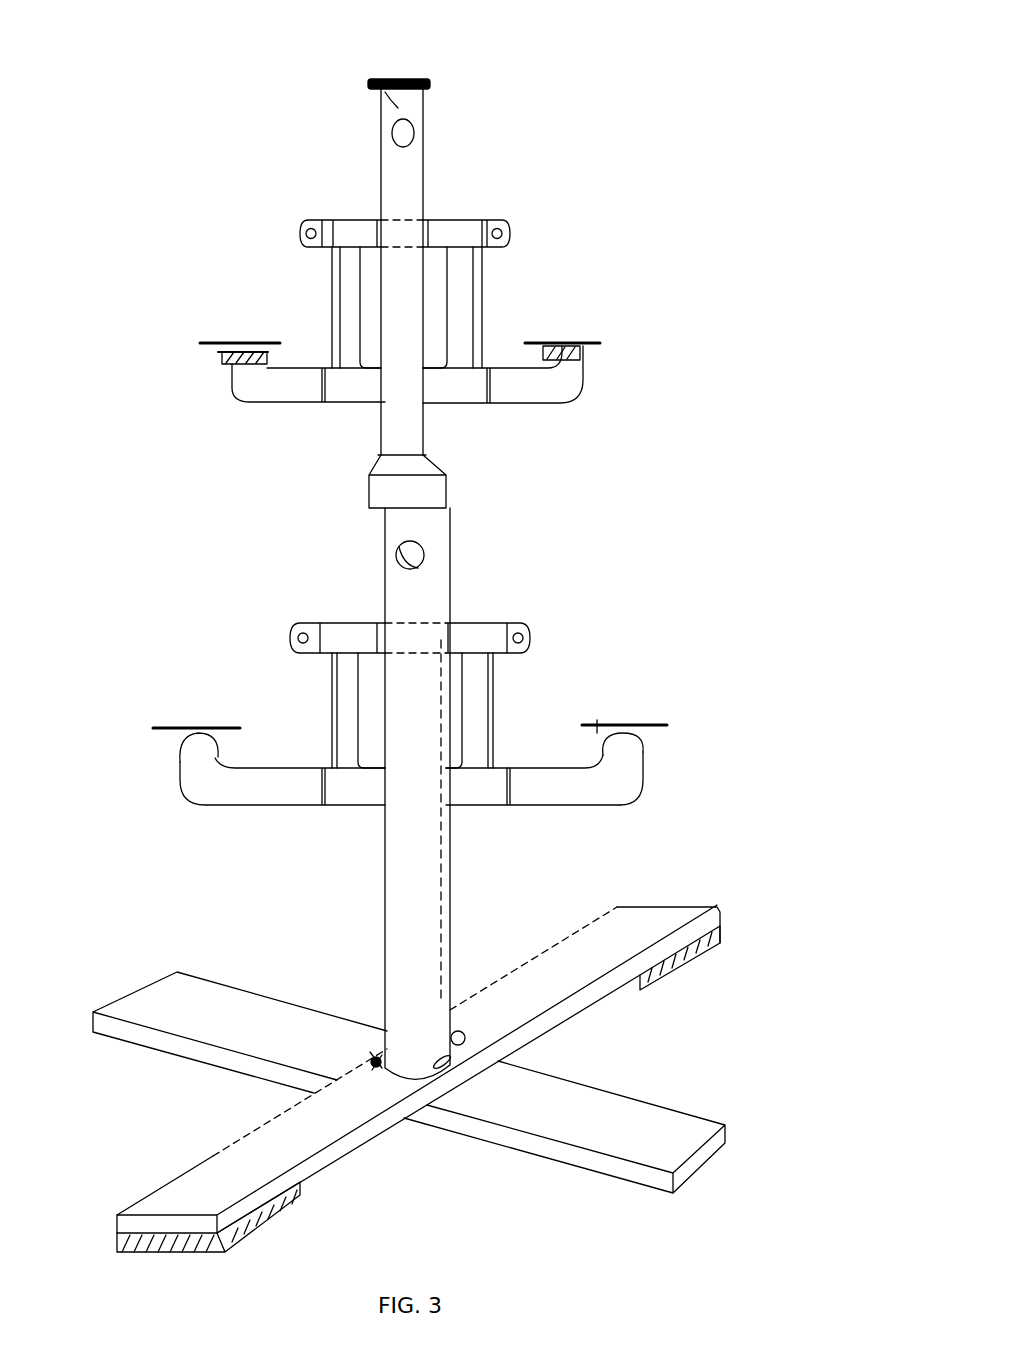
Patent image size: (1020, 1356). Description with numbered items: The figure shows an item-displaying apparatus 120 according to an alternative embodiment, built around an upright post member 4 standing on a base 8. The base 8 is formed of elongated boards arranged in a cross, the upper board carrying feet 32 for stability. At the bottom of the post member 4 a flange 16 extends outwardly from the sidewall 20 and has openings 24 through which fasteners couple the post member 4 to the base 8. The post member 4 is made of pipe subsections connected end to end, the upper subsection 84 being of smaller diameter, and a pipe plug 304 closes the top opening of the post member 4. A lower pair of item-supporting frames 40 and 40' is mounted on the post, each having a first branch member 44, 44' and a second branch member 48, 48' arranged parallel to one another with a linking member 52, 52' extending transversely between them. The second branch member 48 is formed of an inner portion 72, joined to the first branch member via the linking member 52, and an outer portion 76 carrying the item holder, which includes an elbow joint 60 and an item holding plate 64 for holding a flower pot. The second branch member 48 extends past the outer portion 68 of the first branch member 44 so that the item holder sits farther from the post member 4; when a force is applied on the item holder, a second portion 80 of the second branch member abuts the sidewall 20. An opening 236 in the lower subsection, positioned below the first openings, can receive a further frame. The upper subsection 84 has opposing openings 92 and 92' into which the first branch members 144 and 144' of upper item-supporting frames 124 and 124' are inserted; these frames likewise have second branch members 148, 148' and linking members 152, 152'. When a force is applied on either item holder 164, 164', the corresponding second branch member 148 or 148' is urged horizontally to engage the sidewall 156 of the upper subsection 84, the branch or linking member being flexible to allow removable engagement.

The post member 4 is at (510, 510).
The base 8 is at (745, 1042).
The flange 16 is at (370, 1066).
The sidewall 20 is at (452, 965).
The openings 24 is at (465, 1042).
The feet 32 is at (722, 945).
The item-supporting frame 40 is at (579, 726).
The item-supporting frame 40' is at (279, 725).
The first branch member 44 is at (498, 614).
The first branch member 44' is at (366, 615).
The second branch member 48 is at (533, 803).
The second branch member 48' is at (269, 800).
The linking member 52 is at (513, 710).
The linking member 52' is at (301, 710).
The elbow joint 60 is at (632, 785).
The item holding plate 64 is at (637, 722).
The outer portion 68 is at (524, 637).
The inner portion 72 is at (470, 795).
The outer portion 76 is at (590, 760).
The second portion 80 is at (443, 795).
The upper subsection 84 is at (380, 77).
The opening 92 is at (532, 232).
The opening 92' is at (267, 232).
The item-displaying apparatus 120 is at (172, 78).
The item-supporting frame 124 is at (543, 299).
The item-supporting frame 124' is at (268, 296).
The first branch member 144 is at (466, 204).
The first branch member 144' is at (361, 191).
The second branch member 148 is at (503, 400).
The second branch member 148' is at (308, 410).
The linking member 152 is at (488, 307).
The linking member 152' is at (320, 307).
The sidewall 156 is at (422, 173).
The item holder 164 is at (594, 324).
The item holder 164' is at (197, 310).
The opening 236 is at (402, 542).
The pipe plug 304 is at (417, 76).